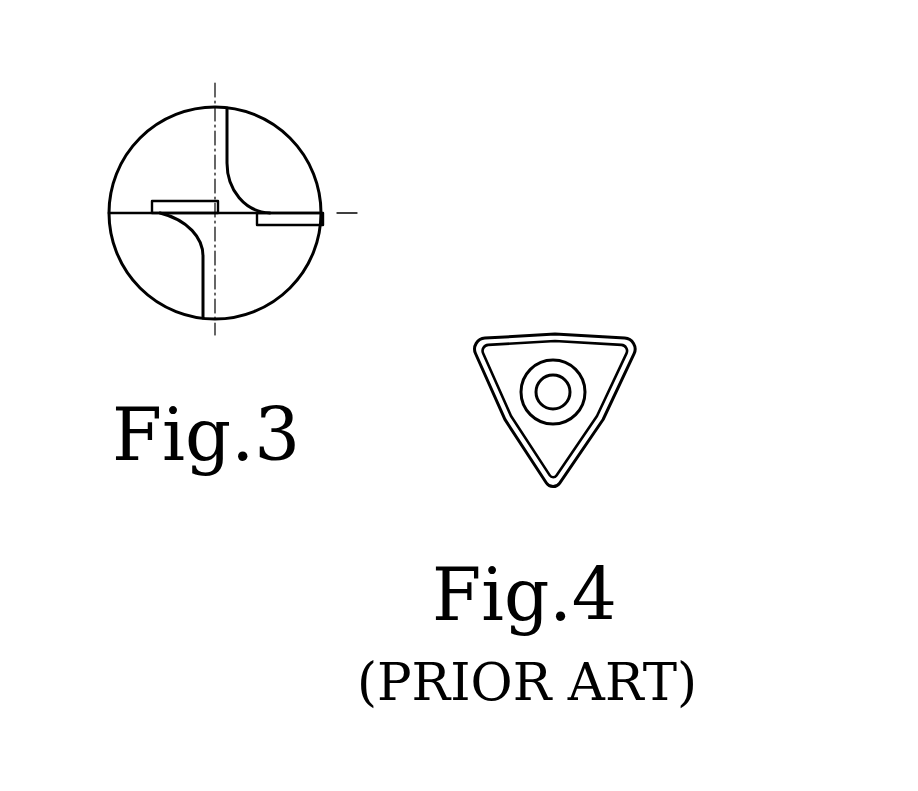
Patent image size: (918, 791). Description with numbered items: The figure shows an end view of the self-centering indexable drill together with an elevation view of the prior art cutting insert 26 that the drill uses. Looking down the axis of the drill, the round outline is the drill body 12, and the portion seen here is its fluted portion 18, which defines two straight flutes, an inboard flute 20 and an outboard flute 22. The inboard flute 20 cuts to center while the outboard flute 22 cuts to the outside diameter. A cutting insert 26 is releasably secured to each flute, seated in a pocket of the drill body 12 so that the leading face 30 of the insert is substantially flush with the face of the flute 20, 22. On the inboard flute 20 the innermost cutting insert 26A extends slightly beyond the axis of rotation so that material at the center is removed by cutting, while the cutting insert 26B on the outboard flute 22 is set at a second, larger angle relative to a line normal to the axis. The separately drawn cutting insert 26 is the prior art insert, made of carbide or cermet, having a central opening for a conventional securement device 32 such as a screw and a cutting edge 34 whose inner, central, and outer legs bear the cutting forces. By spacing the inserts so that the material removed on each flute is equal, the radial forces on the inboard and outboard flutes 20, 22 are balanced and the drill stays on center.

In FIG. 3, the drill body 12 is at (245, 110).
In FIG. 3, the fluted portion 18 is at (290, 137).
In FIG. 3, the inboard flute 20 is at (130, 214).
In FIG. 3, the outboard flute 22 is at (238, 211).
In FIG. 3, the innermost cutting insert 26A is at (174, 201).
In FIG. 3, the cutting insert 26B is at (312, 218).
In FIG. 3, the leading face 30 is at (168, 223).
In FIG. 4, the cutting insert 26 is at (667, 283).
In FIG. 4, the securement device 32 is at (555, 391).
In FIG. 4, the cutting edge 34 is at (520, 339).